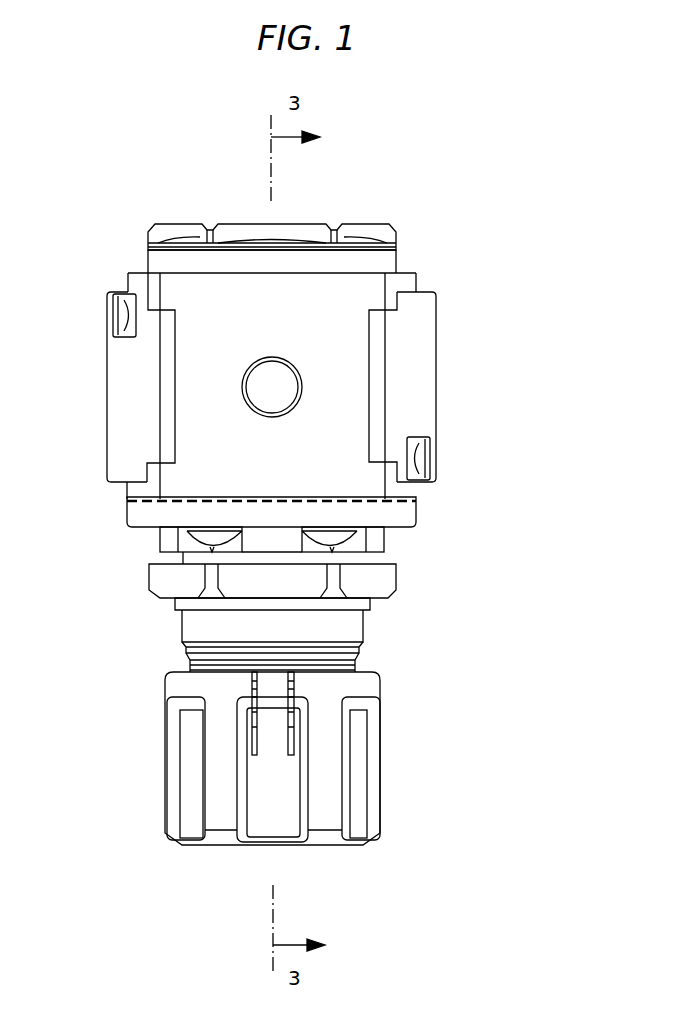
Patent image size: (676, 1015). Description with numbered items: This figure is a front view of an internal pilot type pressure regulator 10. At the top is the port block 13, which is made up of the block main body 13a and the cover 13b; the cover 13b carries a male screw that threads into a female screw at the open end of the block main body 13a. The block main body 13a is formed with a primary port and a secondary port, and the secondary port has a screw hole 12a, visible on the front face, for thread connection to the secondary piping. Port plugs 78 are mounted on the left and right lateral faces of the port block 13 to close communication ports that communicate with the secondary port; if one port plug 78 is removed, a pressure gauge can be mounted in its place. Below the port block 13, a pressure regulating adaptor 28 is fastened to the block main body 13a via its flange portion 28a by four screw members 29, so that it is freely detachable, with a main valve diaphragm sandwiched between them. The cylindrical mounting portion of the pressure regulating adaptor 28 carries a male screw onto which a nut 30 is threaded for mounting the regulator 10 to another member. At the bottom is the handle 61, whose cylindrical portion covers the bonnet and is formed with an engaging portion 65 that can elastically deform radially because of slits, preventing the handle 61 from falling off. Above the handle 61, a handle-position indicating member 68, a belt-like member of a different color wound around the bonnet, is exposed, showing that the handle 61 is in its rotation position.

The internal pilot type pressure regulator 10 is at (418, 212).
The port block 13 is at (245, 273).
The block main body 13a is at (340, 303).
The cover 13b is at (334, 228).
The screw hole 12a is at (274, 390).
The port plugs 78 is at (143, 347).
The flange portion 28a is at (420, 513).
The screw members 29 is at (165, 533).
The nut 30 is at (170, 585).
The pressure regulating adaptor 28 is at (328, 623).
The handle-position indicating member 68 is at (365, 662).
The engaging portion 65 is at (278, 742).
The handle 61 is at (352, 797).